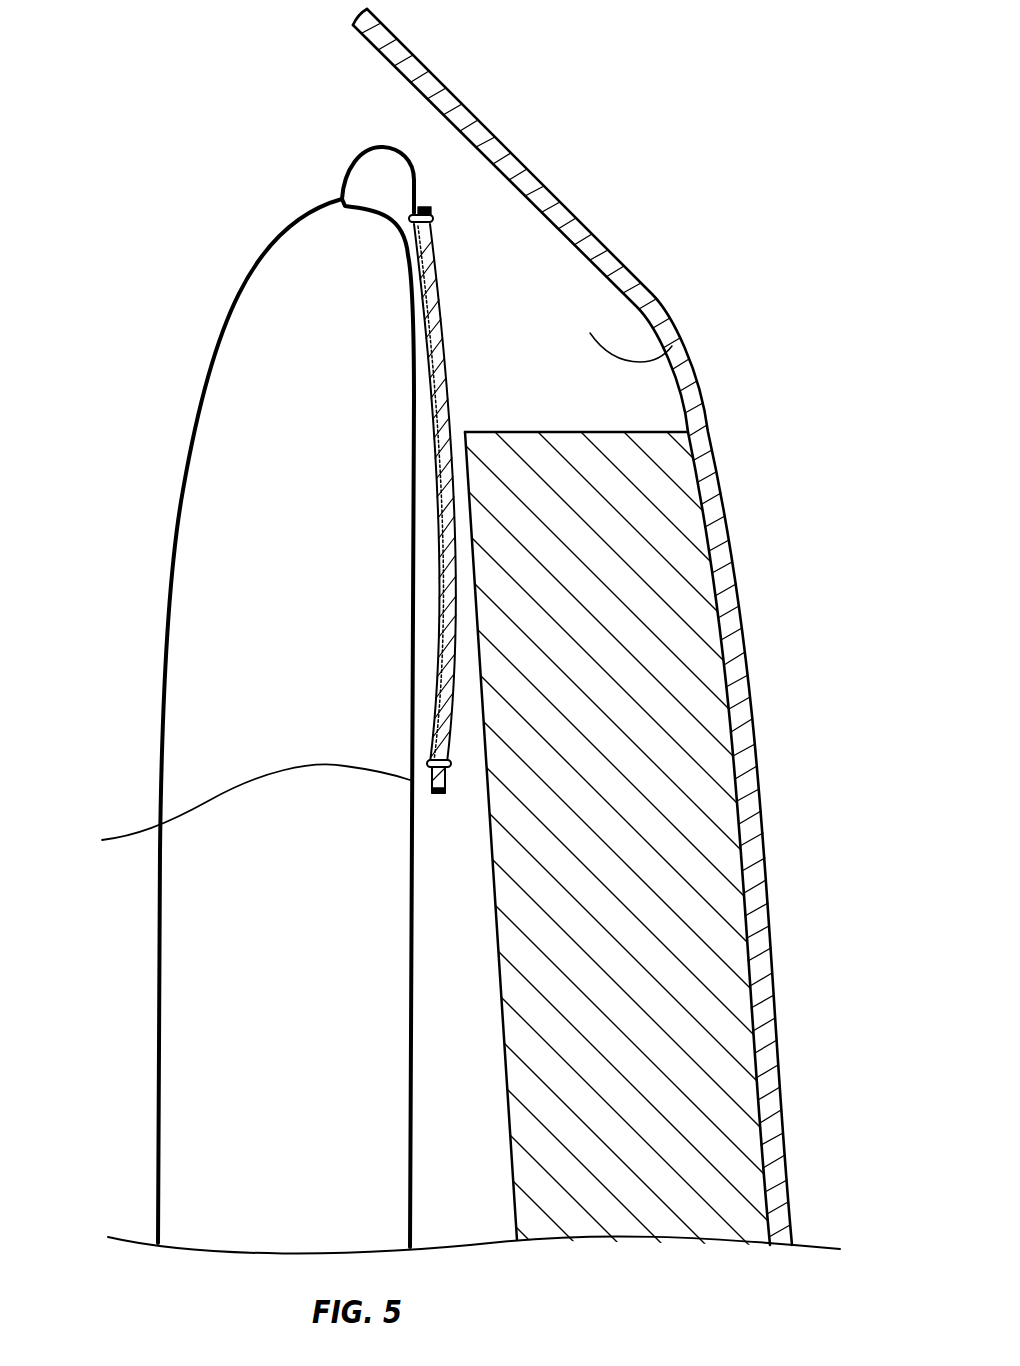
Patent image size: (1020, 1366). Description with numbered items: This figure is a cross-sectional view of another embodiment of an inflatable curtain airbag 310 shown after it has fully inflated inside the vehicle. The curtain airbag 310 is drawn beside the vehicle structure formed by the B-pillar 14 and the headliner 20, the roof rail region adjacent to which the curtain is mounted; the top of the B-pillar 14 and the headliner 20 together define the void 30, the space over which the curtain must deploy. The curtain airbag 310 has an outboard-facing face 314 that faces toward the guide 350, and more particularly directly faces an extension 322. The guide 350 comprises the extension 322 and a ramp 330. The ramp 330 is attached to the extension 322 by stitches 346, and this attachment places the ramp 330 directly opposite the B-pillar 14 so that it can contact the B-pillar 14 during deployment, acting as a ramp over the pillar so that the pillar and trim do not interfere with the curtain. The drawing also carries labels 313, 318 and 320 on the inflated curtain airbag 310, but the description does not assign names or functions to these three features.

The B-pillar 14 is at (568, 432).
The headliner 20 is at (572, 627).
The void 30 is at (680, 347).
The curtain airbag 310 is at (237, 673).
The side wall 313 is at (176, 528).
The outboard-facing face 314 is at (235, 809).
The finger body 318 is at (318, 503).
The bulb 320 is at (362, 147).
The extension 322 is at (434, 276).
The ramp 330 is at (428, 235).
The stitches 346 is at (433, 216).
The guide 350 is at (536, 456).